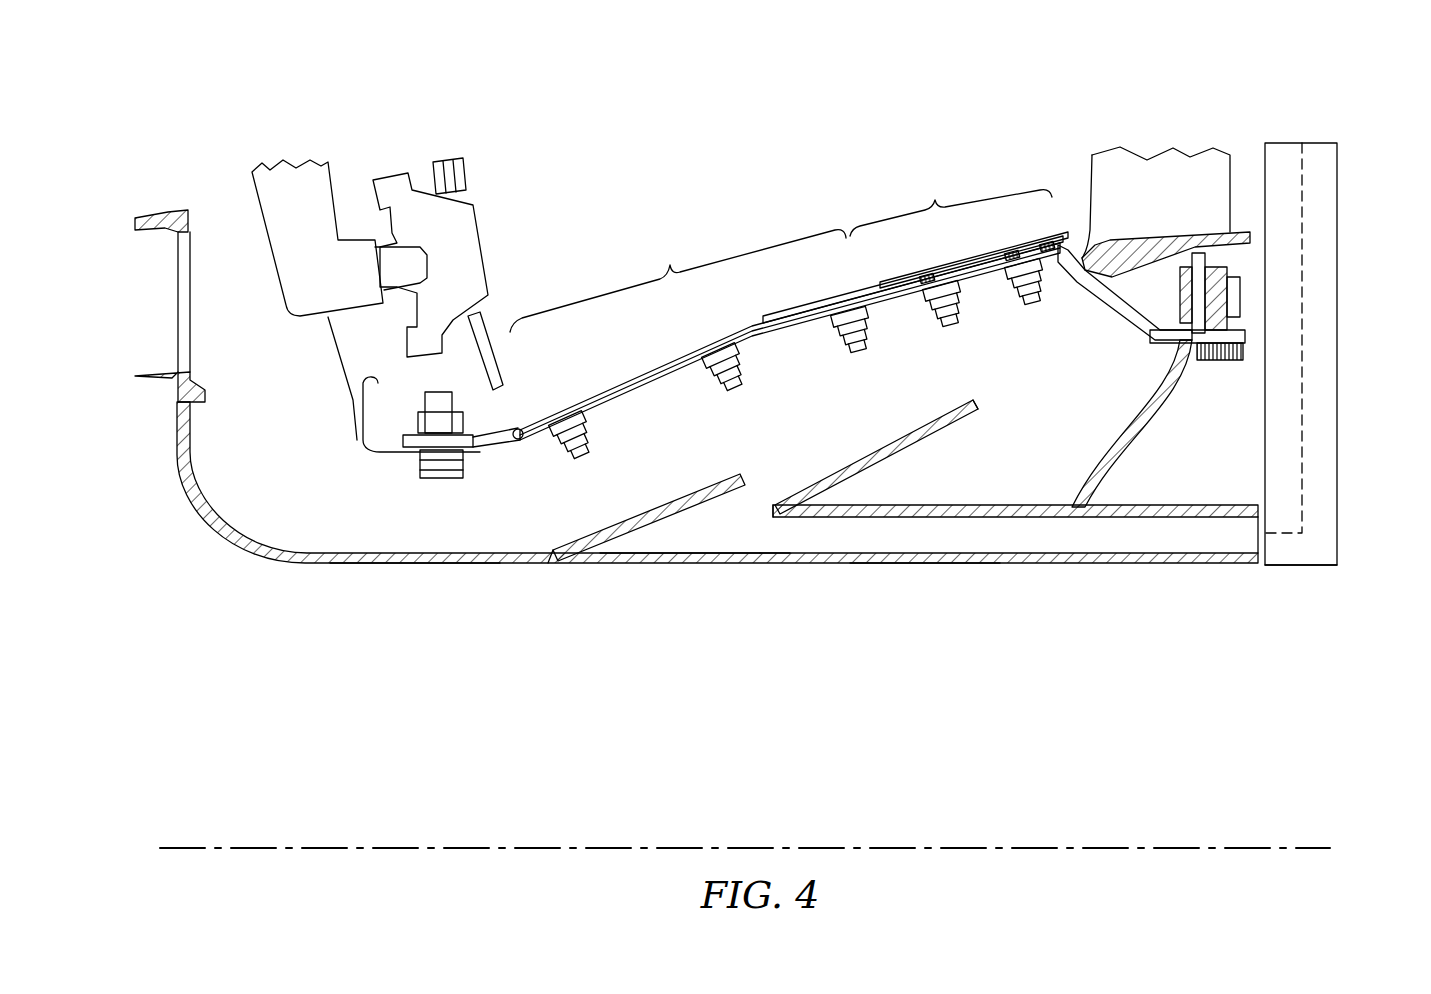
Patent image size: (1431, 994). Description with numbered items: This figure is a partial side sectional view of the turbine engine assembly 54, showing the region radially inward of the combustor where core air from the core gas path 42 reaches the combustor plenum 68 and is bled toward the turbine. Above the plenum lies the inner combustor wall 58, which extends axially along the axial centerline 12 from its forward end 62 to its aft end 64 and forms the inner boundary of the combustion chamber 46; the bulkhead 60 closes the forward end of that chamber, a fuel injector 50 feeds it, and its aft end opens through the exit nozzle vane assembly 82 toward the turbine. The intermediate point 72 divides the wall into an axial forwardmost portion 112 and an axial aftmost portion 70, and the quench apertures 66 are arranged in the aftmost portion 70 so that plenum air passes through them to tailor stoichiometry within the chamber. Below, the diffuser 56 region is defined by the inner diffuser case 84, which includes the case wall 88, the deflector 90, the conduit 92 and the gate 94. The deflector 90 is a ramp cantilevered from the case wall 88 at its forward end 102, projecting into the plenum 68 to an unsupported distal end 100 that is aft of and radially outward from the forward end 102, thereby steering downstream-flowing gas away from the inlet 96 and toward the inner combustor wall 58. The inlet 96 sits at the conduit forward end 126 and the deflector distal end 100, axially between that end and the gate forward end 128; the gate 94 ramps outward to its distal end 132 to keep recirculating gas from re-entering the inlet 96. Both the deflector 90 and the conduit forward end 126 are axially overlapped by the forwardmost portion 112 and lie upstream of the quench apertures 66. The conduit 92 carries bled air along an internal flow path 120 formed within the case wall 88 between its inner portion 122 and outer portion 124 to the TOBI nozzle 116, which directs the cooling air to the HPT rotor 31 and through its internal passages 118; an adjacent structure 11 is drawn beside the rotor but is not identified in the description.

The fuselage skin 11 is at (1340, 489).
The axial centerline 12 is at (1304, 846).
The HPT rotor 31 is at (1340, 378).
The core gas path 42 is at (172, 306).
The combustion chamber 46 is at (736, 166).
The fuel injector 50 is at (240, 175).
The turbine engine assembly 54 is at (350, 241).
The diffuser 56 is at (238, 556).
The inner combustor wall 58 is at (790, 345).
The bulkhead 60 is at (473, 166).
The forward end of inner combustor wall 62 is at (527, 440).
The aft end of inner combustor wall 64 is at (1068, 272).
The quench apertures 66 is at (882, 272).
The combustor plenum 68 is at (261, 452).
The axial aftmost portion 70 is at (951, 204).
The intermediate point 72 is at (855, 296).
The exit nozzle vane assembly 82 is at (1188, 142).
The inner diffuser case 84 is at (470, 570).
The case wall 88 is at (408, 570).
The deflector 90 is at (628, 516).
The conduit 92 is at (994, 503).
The gate 94 is at (893, 443).
The inlet 96 is at (737, 512).
The deflector distal end 100 is at (738, 483).
The deflector forward end 102 is at (550, 545).
The axial forwardmost portion 112 is at (678, 281).
The TOBI nozzle 116 is at (1213, 575).
The internal passages 118 is at (1315, 516).
The internal flow path 120 is at (1015, 490).
The inner portion of case wall 122 is at (905, 568).
The outer portion of case wall 124 is at (950, 504).
The conduit forward end 126 is at (776, 563).
The gate forward end 128 is at (765, 512).
The gate distal end 132 is at (980, 403).